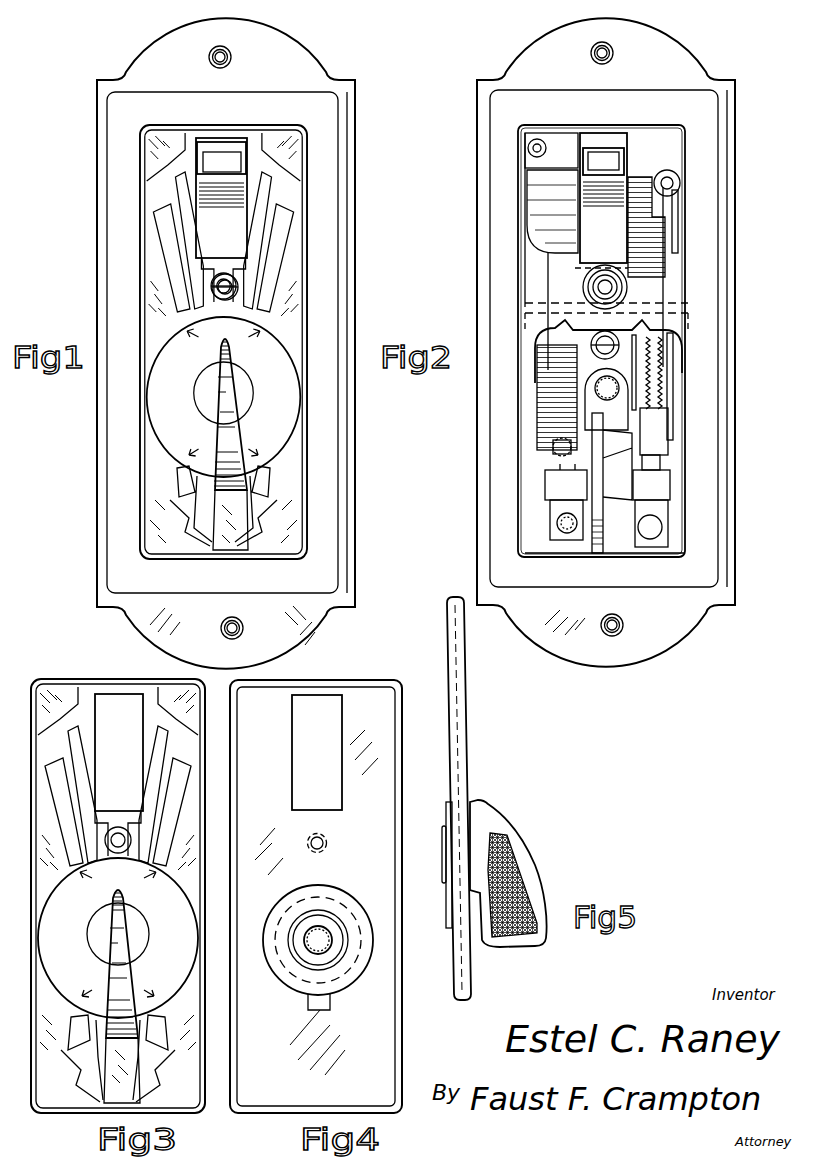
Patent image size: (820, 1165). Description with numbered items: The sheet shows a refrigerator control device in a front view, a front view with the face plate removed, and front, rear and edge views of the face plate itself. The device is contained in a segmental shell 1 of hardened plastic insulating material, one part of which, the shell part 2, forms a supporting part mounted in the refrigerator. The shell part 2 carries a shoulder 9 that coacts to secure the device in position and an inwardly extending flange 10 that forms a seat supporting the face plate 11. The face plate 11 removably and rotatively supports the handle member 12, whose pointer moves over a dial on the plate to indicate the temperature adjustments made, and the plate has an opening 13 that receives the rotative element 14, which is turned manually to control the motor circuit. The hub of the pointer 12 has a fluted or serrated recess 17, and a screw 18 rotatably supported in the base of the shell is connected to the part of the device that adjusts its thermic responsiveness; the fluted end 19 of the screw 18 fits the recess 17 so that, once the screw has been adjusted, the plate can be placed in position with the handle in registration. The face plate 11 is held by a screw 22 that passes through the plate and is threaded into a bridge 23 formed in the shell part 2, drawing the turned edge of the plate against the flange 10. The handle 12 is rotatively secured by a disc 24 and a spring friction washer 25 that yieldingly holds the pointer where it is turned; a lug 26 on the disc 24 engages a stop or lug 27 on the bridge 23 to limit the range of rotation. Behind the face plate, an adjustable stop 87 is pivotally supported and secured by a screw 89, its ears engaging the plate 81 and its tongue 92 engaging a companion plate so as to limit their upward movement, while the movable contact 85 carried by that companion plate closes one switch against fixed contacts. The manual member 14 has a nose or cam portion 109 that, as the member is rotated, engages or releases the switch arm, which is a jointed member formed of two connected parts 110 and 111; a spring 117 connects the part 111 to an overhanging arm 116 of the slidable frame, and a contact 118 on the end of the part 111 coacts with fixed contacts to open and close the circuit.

In FIG. 1, the segmental shell 1 is at (335, 547).
In FIG. 2, the segmental shell 1 is at (705, 280).
In FIG. 1, the shell part 2 is at (318, 123).
In FIG. 2, the shell part 2 is at (708, 382).
In FIG. 1, the shoulder 9 is at (347, 304).
In FIG. 2, the shoulder 9 is at (727, 427).
In FIG. 2, the inwardly extending flange 10 is at (688, 493).
In FIG. 1, the face plate 11 is at (300, 493).
In FIG. 3, the face plate 11 is at (68, 700).
In FIG. 4, the face plate 11 is at (374, 690).
In FIG. 5, the face plate 11 is at (456, 712).
In FIG. 1, the handle member 12 is at (240, 448).
In FIG. 3, the handle member 12 is at (140, 1013).
In FIG. 5, the handle member 12 is at (512, 866).
In FIG. 1, the opening 13 is at (247, 207).
In FIG. 3, the opening 13 is at (110, 694).
In FIG. 4, the opening 13 is at (330, 695).
In FIG. 1, the rotative element 14 is at (232, 165).
In FIG. 2, the rotative element 14 is at (605, 162).
In FIG. 4, the fluted recess 17 is at (325, 935).
In FIG. 2, the screw 18 is at (600, 388).
In FIG. 2, the fluted end 19 is at (598, 400).
In FIG. 1, the screw 22 is at (240, 276).
In FIG. 2, the bridge 23 is at (568, 276).
In FIG. 4, the disc 24 is at (332, 844).
In FIG. 4, the spring friction washer 25 is at (358, 968).
In FIG. 4, the lug 26 is at (312, 1006).
In FIG. 5, the lug 26 is at (447, 916).
In FIG. 2, the stop lug 27 is at (645, 325).
In FIG. 2, the plate 81 is at (537, 178).
In FIG. 2, the movable contact 85 is at (567, 533).
In FIG. 2, the adjustable stop 87 is at (545, 216).
In FIG. 2, the screw 89 is at (598, 346).
In FIG. 2, the tongue 92 is at (553, 447).
In FIG. 2, the nose or cam portion 109 is at (660, 252).
In FIG. 2, the switch arm member 110 is at (668, 405).
In FIG. 2, the switch arm member 111 is at (660, 462).
In FIG. 2, the overhanging arm 116 is at (660, 430).
In FIG. 2, the spring 117 is at (657, 345).
In FIG. 2, the contact 118 is at (650, 540).